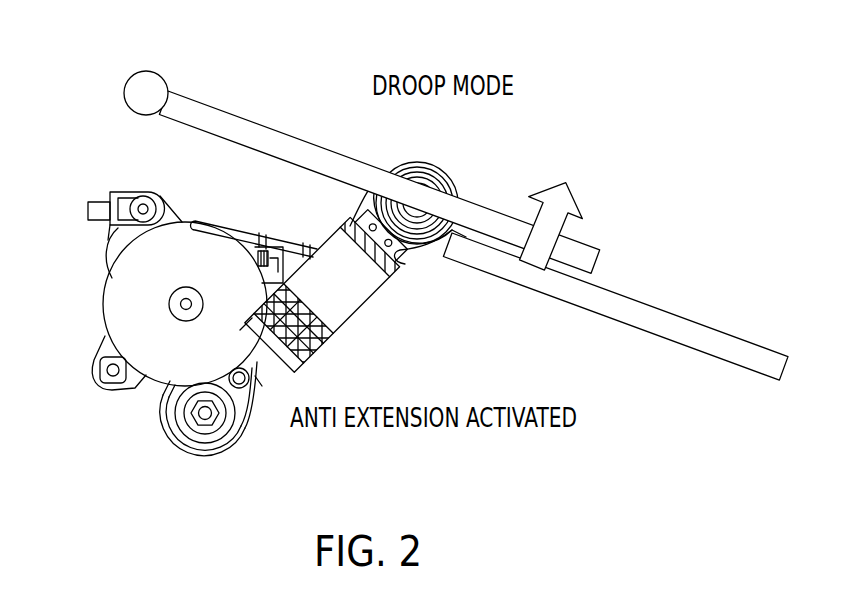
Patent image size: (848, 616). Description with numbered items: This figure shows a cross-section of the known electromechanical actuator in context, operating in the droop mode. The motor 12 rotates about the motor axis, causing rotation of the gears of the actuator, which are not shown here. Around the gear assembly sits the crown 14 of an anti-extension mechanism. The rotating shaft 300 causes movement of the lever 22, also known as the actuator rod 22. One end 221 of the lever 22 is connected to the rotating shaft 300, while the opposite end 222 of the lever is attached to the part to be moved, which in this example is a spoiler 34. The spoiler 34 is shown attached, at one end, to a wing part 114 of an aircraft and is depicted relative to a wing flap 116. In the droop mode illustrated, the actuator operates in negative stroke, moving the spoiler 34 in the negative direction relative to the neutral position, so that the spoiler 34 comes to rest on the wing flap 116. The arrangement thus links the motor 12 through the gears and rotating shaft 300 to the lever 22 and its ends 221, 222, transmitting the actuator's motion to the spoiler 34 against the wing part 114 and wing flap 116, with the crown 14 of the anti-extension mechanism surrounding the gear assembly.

The motor 12 is at (183, 305).
The crown 14 is at (104, 292).
The lever 22 is at (348, 302).
The spoiler 34 is at (220, 125).
The wing part 114 is at (142, 88).
The wing flap 116 is at (615, 308).
The end of the lever 221 is at (240, 433).
The opposite end of the lever 222 is at (418, 180).
The rotating shaft 300 is at (203, 415).